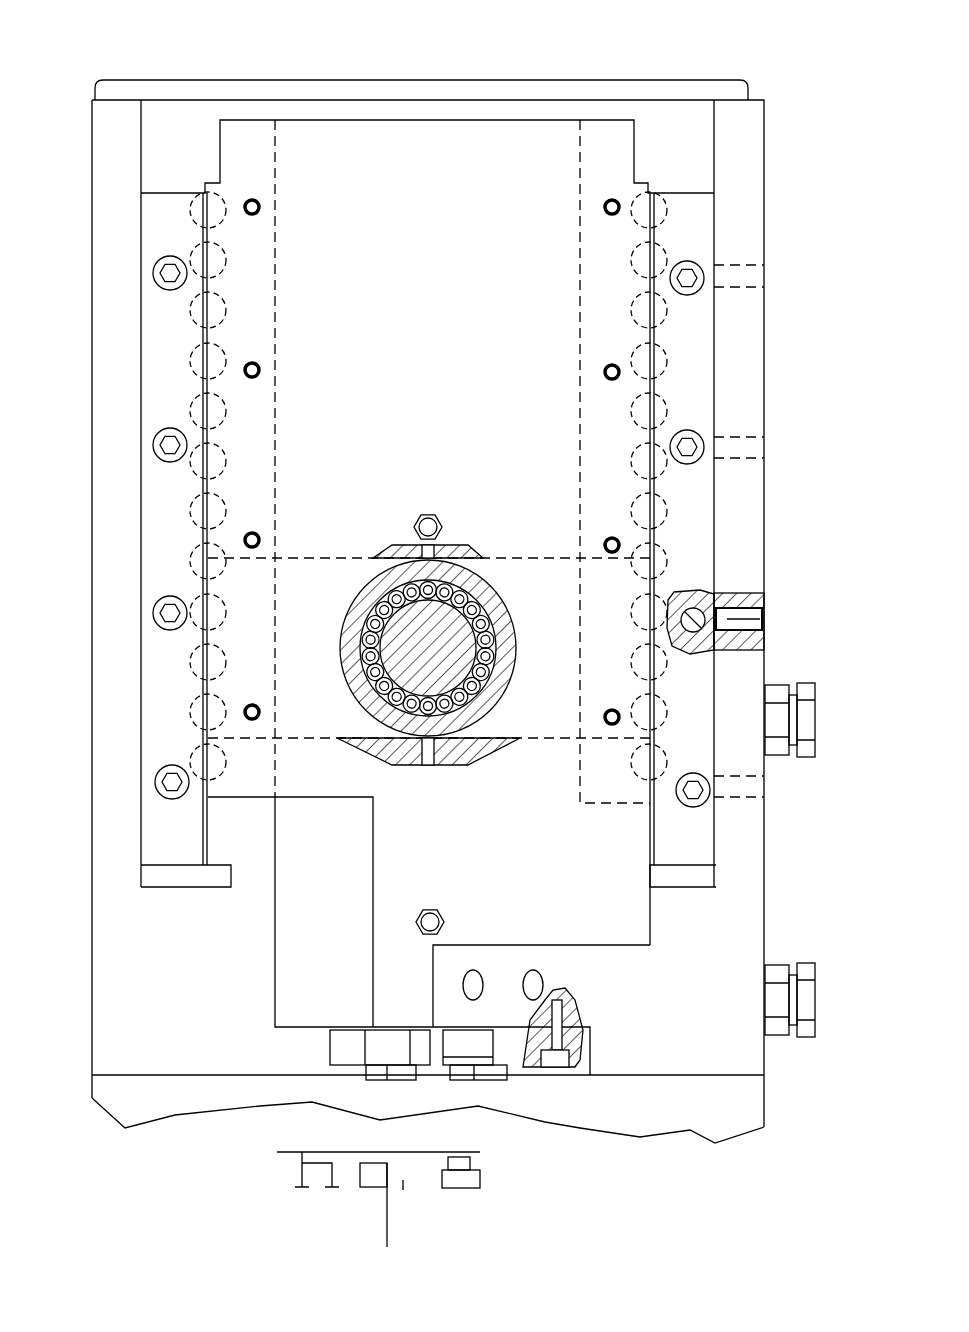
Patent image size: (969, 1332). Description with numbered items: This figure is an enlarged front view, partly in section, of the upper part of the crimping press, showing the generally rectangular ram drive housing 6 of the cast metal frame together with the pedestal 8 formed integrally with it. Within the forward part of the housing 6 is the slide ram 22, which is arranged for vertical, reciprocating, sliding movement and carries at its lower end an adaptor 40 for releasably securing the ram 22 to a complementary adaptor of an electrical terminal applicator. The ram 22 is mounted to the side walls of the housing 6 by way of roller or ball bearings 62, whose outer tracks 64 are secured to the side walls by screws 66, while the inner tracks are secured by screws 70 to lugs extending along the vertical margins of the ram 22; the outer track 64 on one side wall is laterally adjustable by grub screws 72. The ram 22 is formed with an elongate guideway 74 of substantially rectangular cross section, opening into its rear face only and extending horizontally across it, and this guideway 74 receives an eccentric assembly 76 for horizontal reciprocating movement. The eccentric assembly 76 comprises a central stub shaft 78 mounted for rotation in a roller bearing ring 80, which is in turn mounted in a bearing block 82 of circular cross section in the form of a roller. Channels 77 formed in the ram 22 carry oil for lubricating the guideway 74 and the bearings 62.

The ram drive housing 6 is at (783, 140).
The pedestal 8 is at (652, 1124).
The slide ram 22 is at (447, 358).
The adaptor 40 is at (373, 1049).
The roller or ball bearings 62 is at (196, 372).
The outer tracks 64 is at (172, 356).
The screws 66 is at (165, 270).
The screws 70 is at (258, 365).
The grub screws 72 is at (745, 265).
The guideway 74 is at (313, 556).
The eccentric assembly 76 is at (530, 597).
The channels 77 is at (405, 548).
The central stub shaft 78 is at (474, 592).
The roller bearing ring 80 is at (496, 648).
The bearing block 82 is at (350, 632).